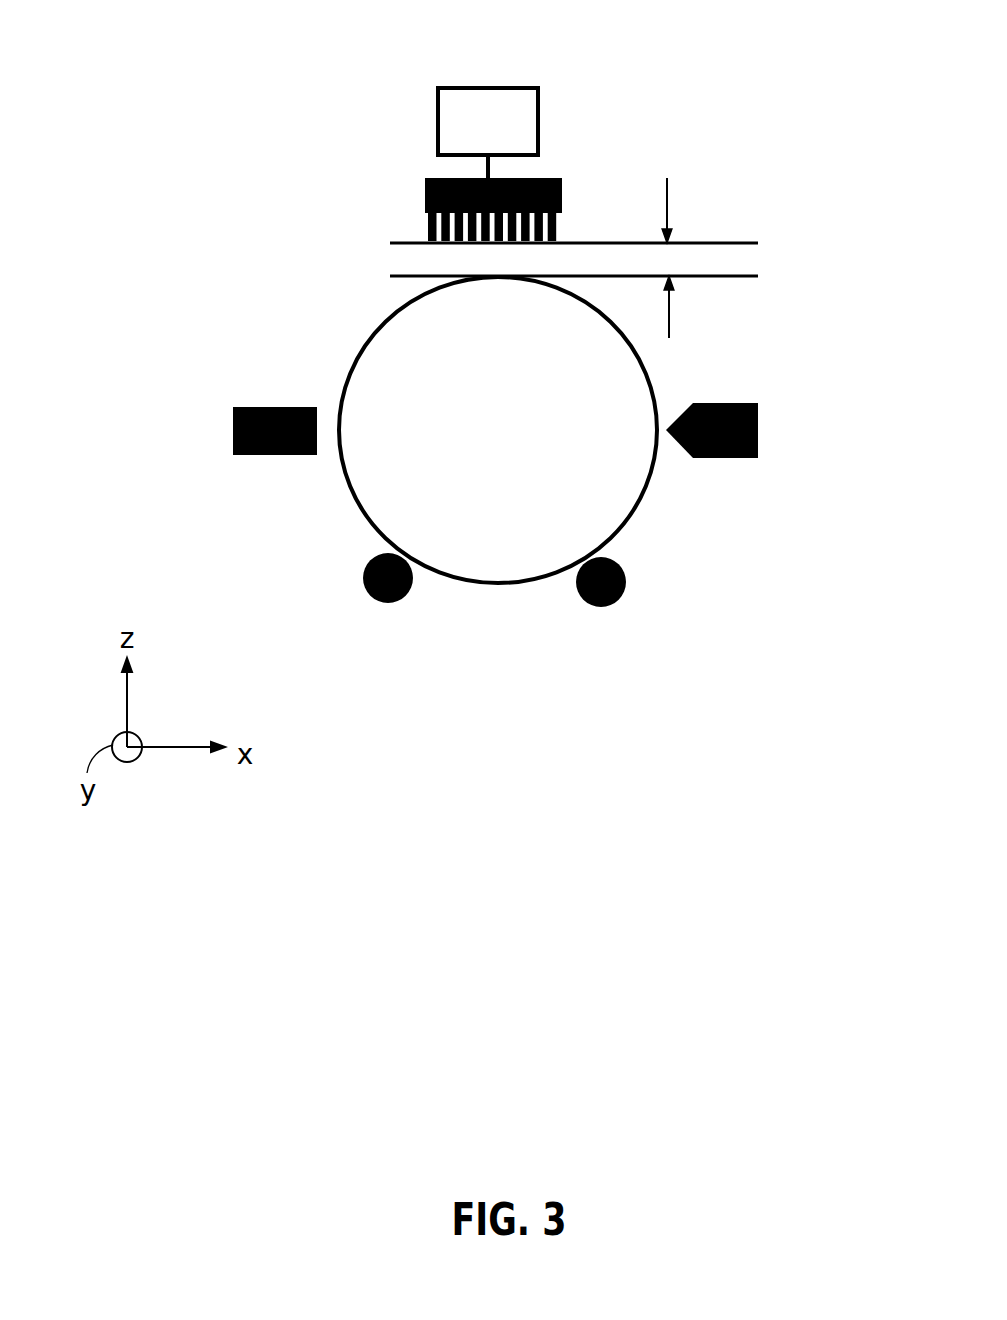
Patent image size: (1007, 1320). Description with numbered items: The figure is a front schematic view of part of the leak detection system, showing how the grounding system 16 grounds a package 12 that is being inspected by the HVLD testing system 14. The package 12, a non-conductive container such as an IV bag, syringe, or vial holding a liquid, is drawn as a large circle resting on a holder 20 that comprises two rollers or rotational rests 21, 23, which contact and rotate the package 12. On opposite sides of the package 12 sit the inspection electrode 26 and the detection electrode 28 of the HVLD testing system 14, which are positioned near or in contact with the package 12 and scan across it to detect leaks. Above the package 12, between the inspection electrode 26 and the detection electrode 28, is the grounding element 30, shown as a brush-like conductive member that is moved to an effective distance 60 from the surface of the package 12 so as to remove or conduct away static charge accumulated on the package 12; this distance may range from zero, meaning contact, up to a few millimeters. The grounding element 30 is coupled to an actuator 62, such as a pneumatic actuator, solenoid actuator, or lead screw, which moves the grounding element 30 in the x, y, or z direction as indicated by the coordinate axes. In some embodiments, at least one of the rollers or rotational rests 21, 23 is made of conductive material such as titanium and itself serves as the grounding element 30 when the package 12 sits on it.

The package 12 is at (378, 331).
The HVLD testing system 14 is at (849, 306).
The grounding system 16 is at (574, 70).
The holder 20 is at (652, 615).
The roller or rotational rest 21 is at (363, 578).
The roller or rotational rest 23 is at (578, 588).
The inspection electrode 26 is at (758, 430).
The detection electrode 28 is at (233, 433).
The grounding element 30 is at (425, 200).
The effective distance 60 is at (672, 210).
The actuator 62 is at (438, 125).